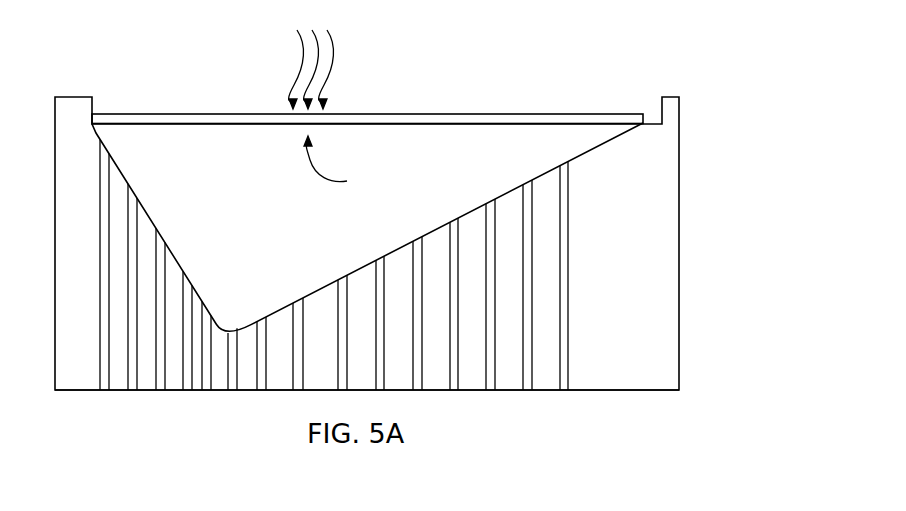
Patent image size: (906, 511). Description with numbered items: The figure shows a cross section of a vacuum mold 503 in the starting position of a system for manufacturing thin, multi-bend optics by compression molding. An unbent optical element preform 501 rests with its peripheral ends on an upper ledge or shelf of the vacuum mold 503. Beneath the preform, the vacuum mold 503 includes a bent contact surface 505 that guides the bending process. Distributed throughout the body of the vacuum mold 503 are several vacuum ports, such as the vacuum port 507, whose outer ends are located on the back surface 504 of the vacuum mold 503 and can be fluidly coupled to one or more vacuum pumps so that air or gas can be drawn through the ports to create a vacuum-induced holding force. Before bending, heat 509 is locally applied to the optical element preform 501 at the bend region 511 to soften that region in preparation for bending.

The optical element preform 501 is at (533, 114).
The vacuum mold 503 is at (680, 180).
The back surface 504 is at (585, 391).
The bent contact surface 505 is at (177, 265).
The vacuum port 507 is at (132, 390).
The heat 509 is at (311, 57).
The bend region 511 is at (346, 163).